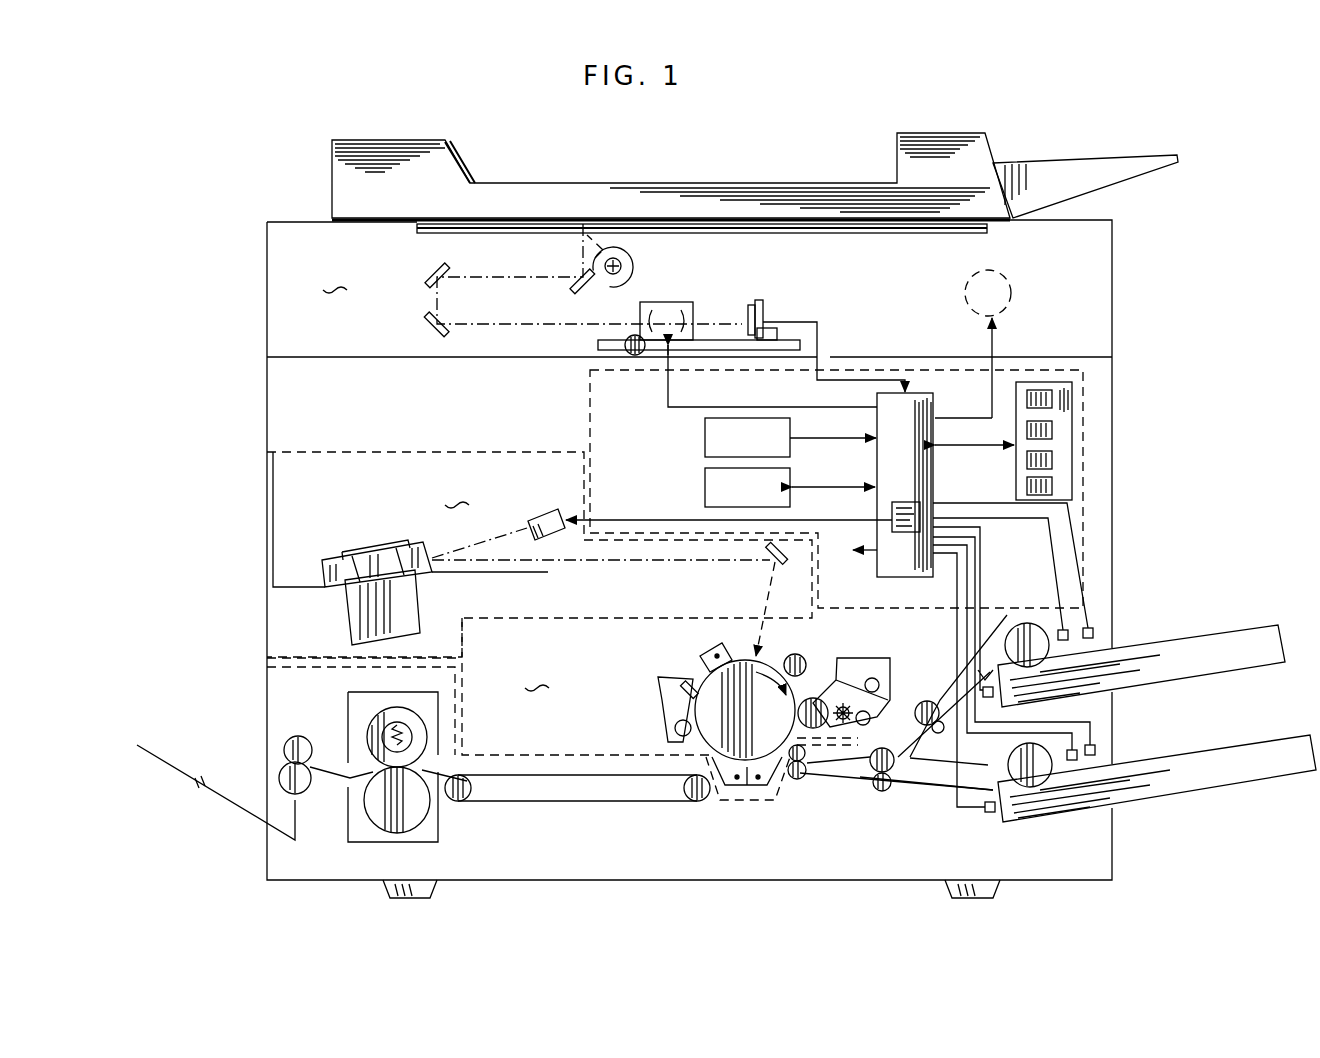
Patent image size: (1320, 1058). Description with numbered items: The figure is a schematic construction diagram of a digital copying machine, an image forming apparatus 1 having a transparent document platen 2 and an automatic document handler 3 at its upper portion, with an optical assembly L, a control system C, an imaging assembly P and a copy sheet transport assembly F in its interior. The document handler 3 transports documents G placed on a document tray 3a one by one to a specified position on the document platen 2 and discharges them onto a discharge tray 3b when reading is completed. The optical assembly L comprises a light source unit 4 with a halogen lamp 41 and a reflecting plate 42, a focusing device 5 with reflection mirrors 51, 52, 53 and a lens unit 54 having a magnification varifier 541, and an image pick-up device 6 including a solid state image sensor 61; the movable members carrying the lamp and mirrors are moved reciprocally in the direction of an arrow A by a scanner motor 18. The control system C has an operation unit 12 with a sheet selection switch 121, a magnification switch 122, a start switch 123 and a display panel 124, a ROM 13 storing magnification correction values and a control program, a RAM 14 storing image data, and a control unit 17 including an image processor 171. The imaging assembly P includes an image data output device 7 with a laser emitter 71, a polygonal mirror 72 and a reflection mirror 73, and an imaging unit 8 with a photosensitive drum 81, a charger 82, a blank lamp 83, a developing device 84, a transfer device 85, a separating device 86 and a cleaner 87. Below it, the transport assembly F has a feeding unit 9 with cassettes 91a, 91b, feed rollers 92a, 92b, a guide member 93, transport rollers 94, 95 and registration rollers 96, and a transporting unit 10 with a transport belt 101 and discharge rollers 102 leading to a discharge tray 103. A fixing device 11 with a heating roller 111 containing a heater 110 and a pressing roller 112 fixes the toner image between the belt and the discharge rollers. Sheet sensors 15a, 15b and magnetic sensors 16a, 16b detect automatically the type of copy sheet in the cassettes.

The image forming apparatus 1 is at (1114, 308).
The document platen 2 is at (913, 233).
The automatic document handler 3 is at (968, 133).
The document tray 3a is at (1060, 160).
The discharge tray 3b is at (612, 185).
The document G is at (650, 218).
The light source unit 4 is at (589, 274).
The halogen lamp 41 is at (628, 278).
The reflecting plate 42 is at (636, 260).
The focusing device 5 is at (396, 301).
The reflection mirror 51 is at (573, 287).
The reflection mirror 52 is at (430, 270).
The reflection mirror 53 is at (430, 332).
The lens unit 54 is at (640, 312).
The magnification varifier 541 is at (625, 343).
The image pick-up device 6 is at (804, 292).
The solid state image sensor (CCD) 61 is at (748, 312).
The arrow A is at (718, 249).
The optical assembly L is at (335, 277).
The scanner motor 18 is at (1012, 288).
The control system C is at (1013, 362).
The control unit 17 is at (936, 410).
The image processor 171 is at (922, 510).
The ROM 13 is at (705, 437).
The RAM 14 is at (705, 487).
The operation unit 12 is at (1056, 434).
The sheet selection switch 121 is at (1055, 396).
The magnification switch 122 is at (1055, 430).
The start switch 123 is at (1055, 460).
The display panel 124 is at (1055, 486).
The imaging assembly P is at (420, 450).
The image data output device 7 is at (540, 554).
The laser emitter 71 is at (538, 512).
The polygonal mirror 72 is at (380, 545).
The reflection mirror 73 is at (781, 565).
The imaging unit 8 is at (676, 738).
The photosensitive drum 81 is at (695, 672).
The charger 82 is at (705, 650).
The blank lamp 83 is at (802, 655).
The developing device 84 is at (820, 695).
The transfer device 85 is at (763, 800).
The separating device 86 is at (735, 800).
The cleaner 87 is at (660, 705).
The feeding unit 9 is at (897, 737).
The guide member 93 is at (937, 778).
The pair of transport rollers 94 is at (925, 702).
The pair of transport rollers 95 is at (883, 792).
The pair of registration rollers 96 is at (800, 760).
The cassette 91a is at (1232, 745).
The cassette 91b is at (1245, 630).
The feed roller 92a is at (1042, 790).
The feed roller 92b is at (1025, 625).
The sheet sensor 15a is at (1100, 722).
The sheet sensor 15b is at (1096, 617).
The magnetic sensor 16a is at (988, 813).
The magnetic sensor 16b is at (985, 690).
The transporting unit 10 is at (588, 813).
The transport belt 101 is at (520, 805).
The fixing device 11 is at (410, 840).
The heater 110 is at (413, 733).
The heating roller 111 is at (414, 720).
The pressing roller 112 is at (370, 820).
The pair of discharge rollers 102 is at (295, 735).
The discharge tray 103 is at (222, 790).
The copy sheet transport assembly F is at (283, 669).